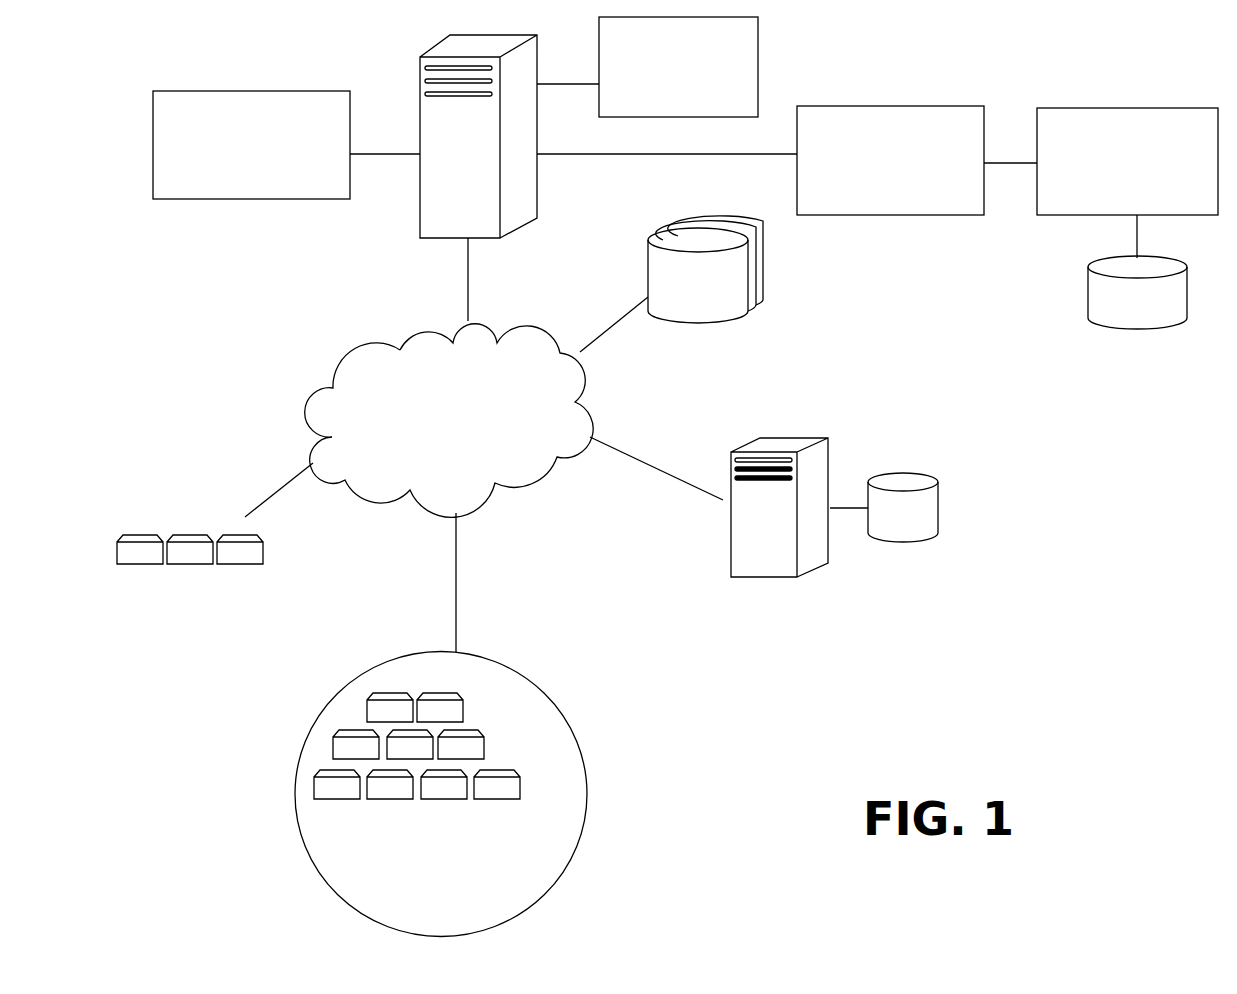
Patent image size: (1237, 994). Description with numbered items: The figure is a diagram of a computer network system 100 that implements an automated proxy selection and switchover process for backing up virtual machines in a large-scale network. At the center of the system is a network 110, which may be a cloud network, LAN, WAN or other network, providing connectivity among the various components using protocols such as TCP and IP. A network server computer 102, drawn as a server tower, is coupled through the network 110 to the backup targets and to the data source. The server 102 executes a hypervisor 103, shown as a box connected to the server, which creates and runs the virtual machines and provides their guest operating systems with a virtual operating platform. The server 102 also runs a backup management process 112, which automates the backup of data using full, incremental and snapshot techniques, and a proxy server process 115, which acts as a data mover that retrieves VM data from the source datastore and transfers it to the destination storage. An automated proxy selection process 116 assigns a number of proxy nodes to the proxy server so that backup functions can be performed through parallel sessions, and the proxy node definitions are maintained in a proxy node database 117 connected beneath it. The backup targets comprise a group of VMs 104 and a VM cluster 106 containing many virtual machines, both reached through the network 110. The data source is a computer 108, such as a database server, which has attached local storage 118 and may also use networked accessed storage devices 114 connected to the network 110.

The computer network system 100 is at (950, 50).
The network server computer 102 is at (478, 136).
The hypervisor 103 is at (678, 67).
The virtual machines 104 is at (190, 568).
The VM cluster 106 is at (441, 794).
The computer 108 is at (779, 507).
The network 110 is at (449, 421).
The backup management process 112 is at (251, 145).
The networked accessed storage devices 114 is at (705, 284).
The proxy server process 115 is at (890, 160).
The proxy node selection process 116 is at (1127, 161).
The proxy node database 117 is at (1137, 292).
The local storage 118 is at (903, 523).